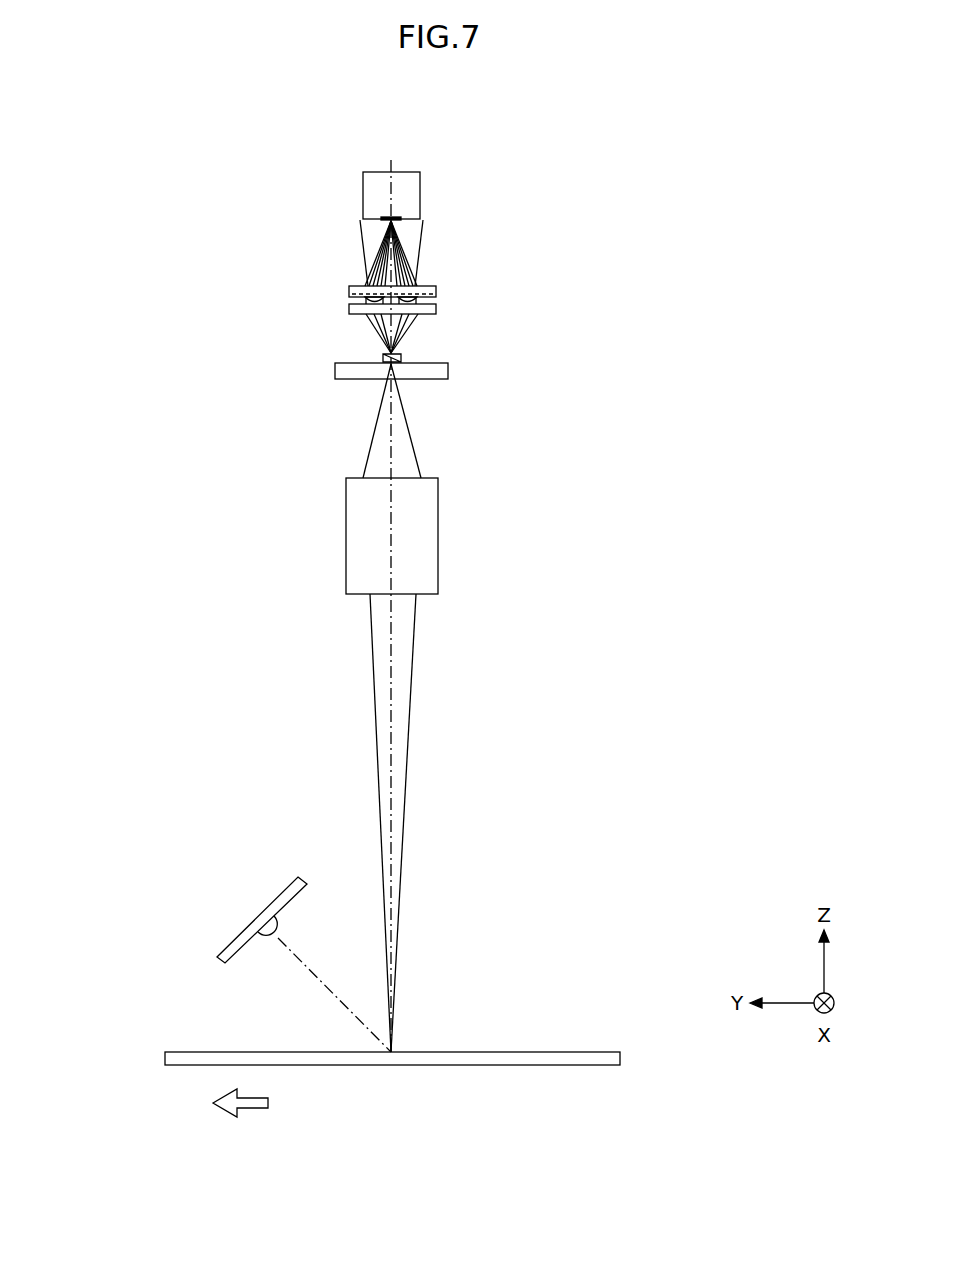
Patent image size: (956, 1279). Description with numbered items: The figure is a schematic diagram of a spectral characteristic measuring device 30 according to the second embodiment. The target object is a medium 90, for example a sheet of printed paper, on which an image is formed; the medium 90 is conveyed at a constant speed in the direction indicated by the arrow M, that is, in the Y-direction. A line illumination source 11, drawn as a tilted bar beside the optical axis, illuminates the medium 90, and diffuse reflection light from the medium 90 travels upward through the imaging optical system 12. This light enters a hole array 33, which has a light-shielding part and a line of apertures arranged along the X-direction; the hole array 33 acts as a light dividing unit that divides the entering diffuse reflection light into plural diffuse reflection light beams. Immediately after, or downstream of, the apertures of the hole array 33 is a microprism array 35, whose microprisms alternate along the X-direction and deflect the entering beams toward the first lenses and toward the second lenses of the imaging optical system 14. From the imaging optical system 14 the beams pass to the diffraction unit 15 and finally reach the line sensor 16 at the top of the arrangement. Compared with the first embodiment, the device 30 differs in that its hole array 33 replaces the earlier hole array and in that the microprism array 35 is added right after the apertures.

The spectral characteristic measuring device 30 is at (85, 111).
The line sensor 16 is at (420, 193).
The diffraction unit 15 is at (436, 290).
The imaging optical system 14 is at (436, 309).
The microprism array 35 is at (402, 358).
The hole array 33 is at (448, 372).
The imaging optical system 12 is at (438, 537).
The line illumination source 11 is at (257, 915).
The medium 90 is at (540, 1065).
The conveyance direction arrow M is at (250, 1110).